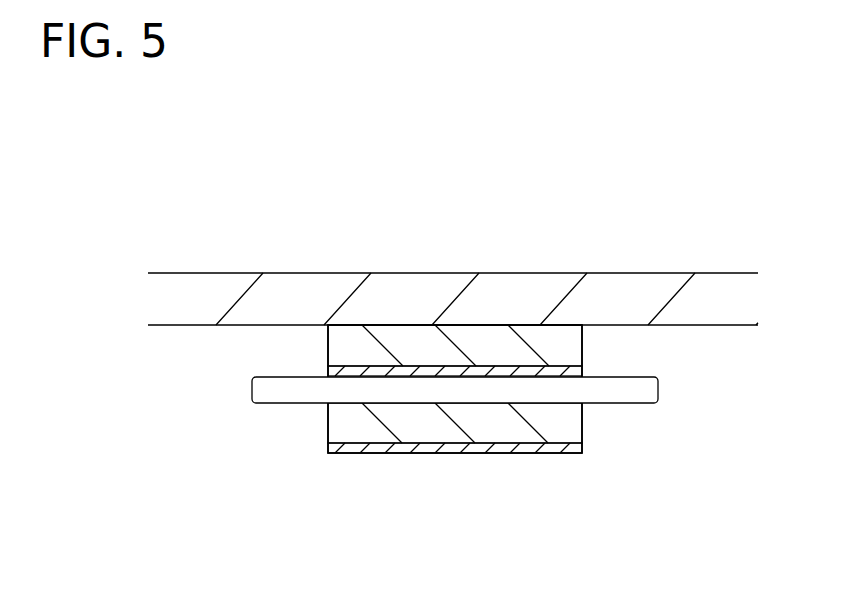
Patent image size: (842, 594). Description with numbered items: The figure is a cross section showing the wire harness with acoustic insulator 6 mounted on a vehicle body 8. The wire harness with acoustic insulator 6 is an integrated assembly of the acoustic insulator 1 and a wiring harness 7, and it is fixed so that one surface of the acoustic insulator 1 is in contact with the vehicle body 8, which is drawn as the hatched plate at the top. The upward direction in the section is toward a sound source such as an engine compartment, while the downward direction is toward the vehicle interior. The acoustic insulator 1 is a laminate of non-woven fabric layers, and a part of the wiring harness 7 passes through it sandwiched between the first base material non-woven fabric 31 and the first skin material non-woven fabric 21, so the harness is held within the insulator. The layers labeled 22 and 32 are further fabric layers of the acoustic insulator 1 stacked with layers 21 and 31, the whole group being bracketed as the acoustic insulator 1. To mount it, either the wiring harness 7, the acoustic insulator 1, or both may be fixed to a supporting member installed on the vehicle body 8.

The acoustic insulator 1 is at (715, 525).
The wire harness with acoustic insulator 6 is at (399, 462).
The wiring harness 7 is at (273, 403).
The vehicle body 8 is at (170, 325).
The first skin material non-woven fabric 21 is at (598, 378).
The second sliding layer 22 is at (565, 453).
The first base material non-woven fabric 31 is at (579, 422).
The second bearing body 32 is at (577, 348).